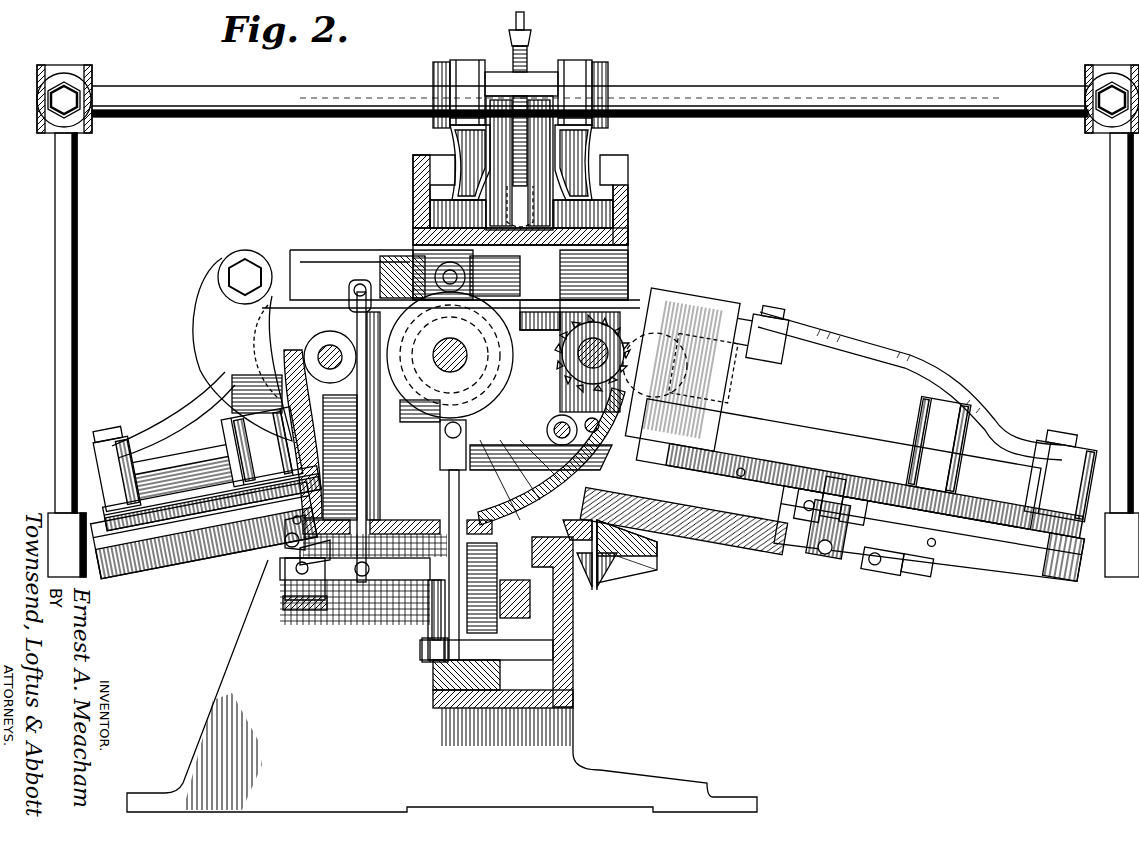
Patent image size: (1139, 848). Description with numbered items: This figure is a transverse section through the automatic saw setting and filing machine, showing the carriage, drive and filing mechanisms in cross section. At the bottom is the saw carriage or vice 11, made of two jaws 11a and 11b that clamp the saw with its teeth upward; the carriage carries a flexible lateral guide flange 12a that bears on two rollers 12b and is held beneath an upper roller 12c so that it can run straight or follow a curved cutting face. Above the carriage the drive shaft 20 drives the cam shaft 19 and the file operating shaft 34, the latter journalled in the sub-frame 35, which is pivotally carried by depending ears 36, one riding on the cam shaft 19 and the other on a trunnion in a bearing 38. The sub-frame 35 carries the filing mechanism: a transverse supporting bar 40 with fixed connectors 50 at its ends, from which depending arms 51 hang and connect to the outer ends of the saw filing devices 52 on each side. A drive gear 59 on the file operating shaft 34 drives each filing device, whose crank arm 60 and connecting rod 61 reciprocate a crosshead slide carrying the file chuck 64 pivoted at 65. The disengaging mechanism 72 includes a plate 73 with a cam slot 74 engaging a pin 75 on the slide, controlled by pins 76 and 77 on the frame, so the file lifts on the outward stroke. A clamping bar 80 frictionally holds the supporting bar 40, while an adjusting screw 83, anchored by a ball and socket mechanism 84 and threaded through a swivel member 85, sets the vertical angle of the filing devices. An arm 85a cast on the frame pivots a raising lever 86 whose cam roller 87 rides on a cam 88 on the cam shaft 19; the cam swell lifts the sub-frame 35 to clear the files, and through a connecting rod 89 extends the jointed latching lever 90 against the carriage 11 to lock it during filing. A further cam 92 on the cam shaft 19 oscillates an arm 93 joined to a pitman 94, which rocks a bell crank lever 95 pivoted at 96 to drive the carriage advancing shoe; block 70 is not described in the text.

The saw carriage or vice 11 is at (605, 575).
The jaw 11a is at (590, 508).
The jaw 11b is at (660, 565).
The lateral guide flange 12a is at (512, 700).
The rollers 12b is at (470, 700).
The upper roller 12c is at (515, 598).
The cam shaft 19 is at (460, 345).
The drive shaft 20 is at (330, 345).
The file operating shaft 34 is at (690, 320).
The sub-frame 35 is at (628, 218).
The depending ears 36 is at (628, 262).
The bearing 38 is at (430, 164).
The transverse supporting bar 40 is at (840, 86).
The fixed connectors 50 is at (92, 78).
The depending arms 51 is at (78, 310).
The saw filing devices 52 is at (182, 492).
The drive gear 59 is at (610, 330).
The crank arm 60 is at (735, 340).
The connecting rod 61 is at (190, 402).
The file chuck 64 is at (298, 556).
The pivot 65 is at (235, 548).
The block 70 is at (250, 443).
The disengaging mechanism 72 is at (283, 545).
The plate 73 is at (890, 535).
The cam slot 74 is at (830, 505).
The pin 75 is at (895, 515).
The pin 76 is at (745, 458).
The pin 77 is at (880, 500).
The clamping bar 80 is at (530, 140).
The adjusting screw 83 is at (530, 55).
The ball and socket mechanism 84 is at (560, 192).
The swivel member 85 is at (540, 78).
The arm 85a is at (212, 306).
The raising lever 86 is at (290, 258).
The cam roller 87 is at (440, 270).
The cam 88 is at (410, 408).
The connecting rod 89 is at (368, 500).
The latching lever 90 is at (400, 582).
The cam 92 is at (495, 452).
The arm 93 is at (532, 432).
The pitman 94 is at (449, 510).
The bell crank lever 95 is at (428, 622).
The pivot 96 is at (420, 652).